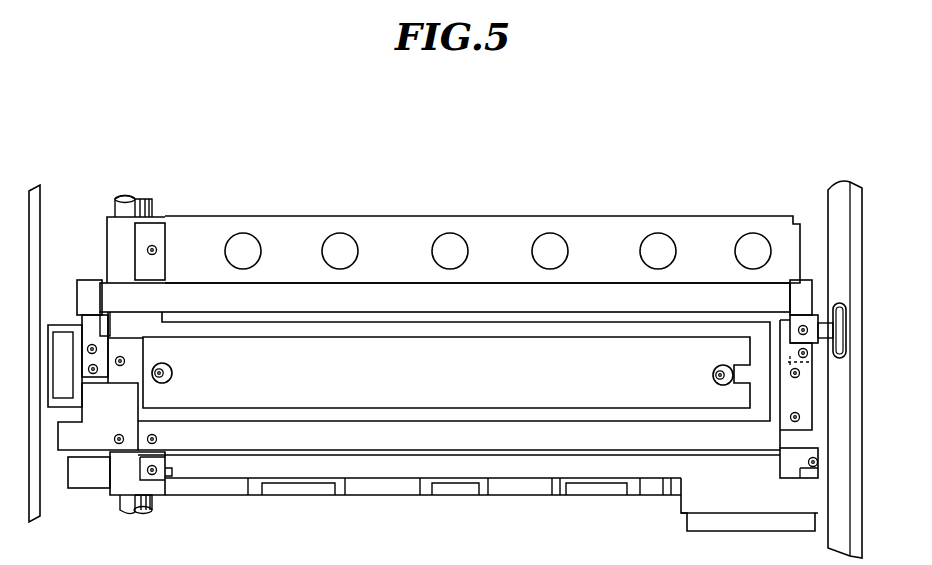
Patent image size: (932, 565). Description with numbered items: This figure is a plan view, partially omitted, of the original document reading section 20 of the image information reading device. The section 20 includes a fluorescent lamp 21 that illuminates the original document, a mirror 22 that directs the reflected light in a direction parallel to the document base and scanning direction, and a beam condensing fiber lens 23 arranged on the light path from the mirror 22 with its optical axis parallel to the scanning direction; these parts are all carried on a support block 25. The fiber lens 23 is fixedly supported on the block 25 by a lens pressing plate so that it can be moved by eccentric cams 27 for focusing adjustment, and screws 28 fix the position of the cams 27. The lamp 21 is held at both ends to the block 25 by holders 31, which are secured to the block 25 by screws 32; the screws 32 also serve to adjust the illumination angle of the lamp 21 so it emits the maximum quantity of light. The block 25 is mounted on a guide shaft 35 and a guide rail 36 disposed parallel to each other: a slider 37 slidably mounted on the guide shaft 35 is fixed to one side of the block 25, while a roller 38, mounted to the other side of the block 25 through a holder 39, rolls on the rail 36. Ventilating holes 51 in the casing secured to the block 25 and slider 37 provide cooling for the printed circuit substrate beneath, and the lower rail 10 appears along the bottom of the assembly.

The lower guide rail 10 is at (527, 447).
The original document reading section 20 is at (631, 208).
The fluorescent lamp 21 is at (700, 294).
The mirror 22 is at (388, 327).
The beam condensing fiber lens 23 is at (493, 348).
The support block 25 is at (670, 433).
The eccentric cams 27 is at (172, 367).
The screws 28 is at (165, 377).
The holders 31 is at (92, 285).
The screws 32 is at (90, 366).
The guide shaft 35 is at (130, 505).
The guide rail 36 is at (840, 226).
The slider 37 is at (117, 230).
The roller 38 is at (843, 343).
The holder 39 is at (783, 328).
The ventilating holes 51 is at (340, 244).